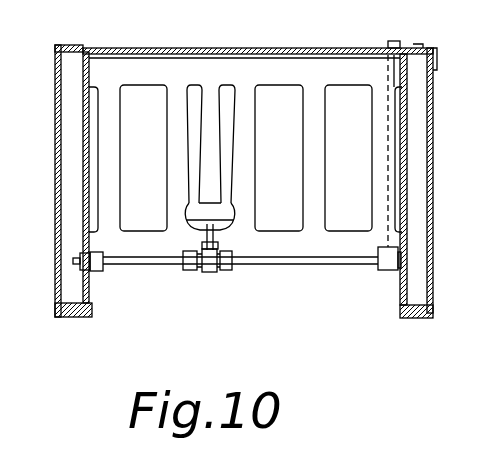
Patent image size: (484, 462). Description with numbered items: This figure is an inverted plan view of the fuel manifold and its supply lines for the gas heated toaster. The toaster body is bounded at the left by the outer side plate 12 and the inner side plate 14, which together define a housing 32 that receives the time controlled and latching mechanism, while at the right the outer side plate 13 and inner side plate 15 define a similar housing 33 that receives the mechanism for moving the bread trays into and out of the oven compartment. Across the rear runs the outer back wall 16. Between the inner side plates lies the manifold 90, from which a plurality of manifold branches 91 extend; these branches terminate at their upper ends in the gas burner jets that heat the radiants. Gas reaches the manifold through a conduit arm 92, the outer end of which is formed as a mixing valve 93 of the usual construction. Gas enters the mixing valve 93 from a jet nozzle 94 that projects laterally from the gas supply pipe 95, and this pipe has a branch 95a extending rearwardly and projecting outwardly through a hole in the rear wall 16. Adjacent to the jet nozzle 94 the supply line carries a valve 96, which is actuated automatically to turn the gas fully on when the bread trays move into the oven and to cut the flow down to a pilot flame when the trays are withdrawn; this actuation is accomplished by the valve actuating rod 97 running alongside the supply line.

The outer side plate 12 is at (57, 187).
The outer side plate 13 is at (433, 192).
The inner side plate 14 is at (83, 124).
The inner side plate 15 is at (407, 233).
The outer back wall 16 is at (208, 49).
The housing 32 is at (68, 207).
The housing 33 is at (427, 148).
The manifold 90 is at (245, 145).
The manifold branches 91 is at (112, 170).
The conduit arm 92 is at (217, 148).
The mixing valve 93 is at (228, 222).
The jet nozzle 94 is at (202, 235).
The gas supply pipe 95 is at (300, 257).
The branch 95a is at (416, 34).
The valve 96 is at (229, 251).
The valve actuating rod 97 is at (112, 262).